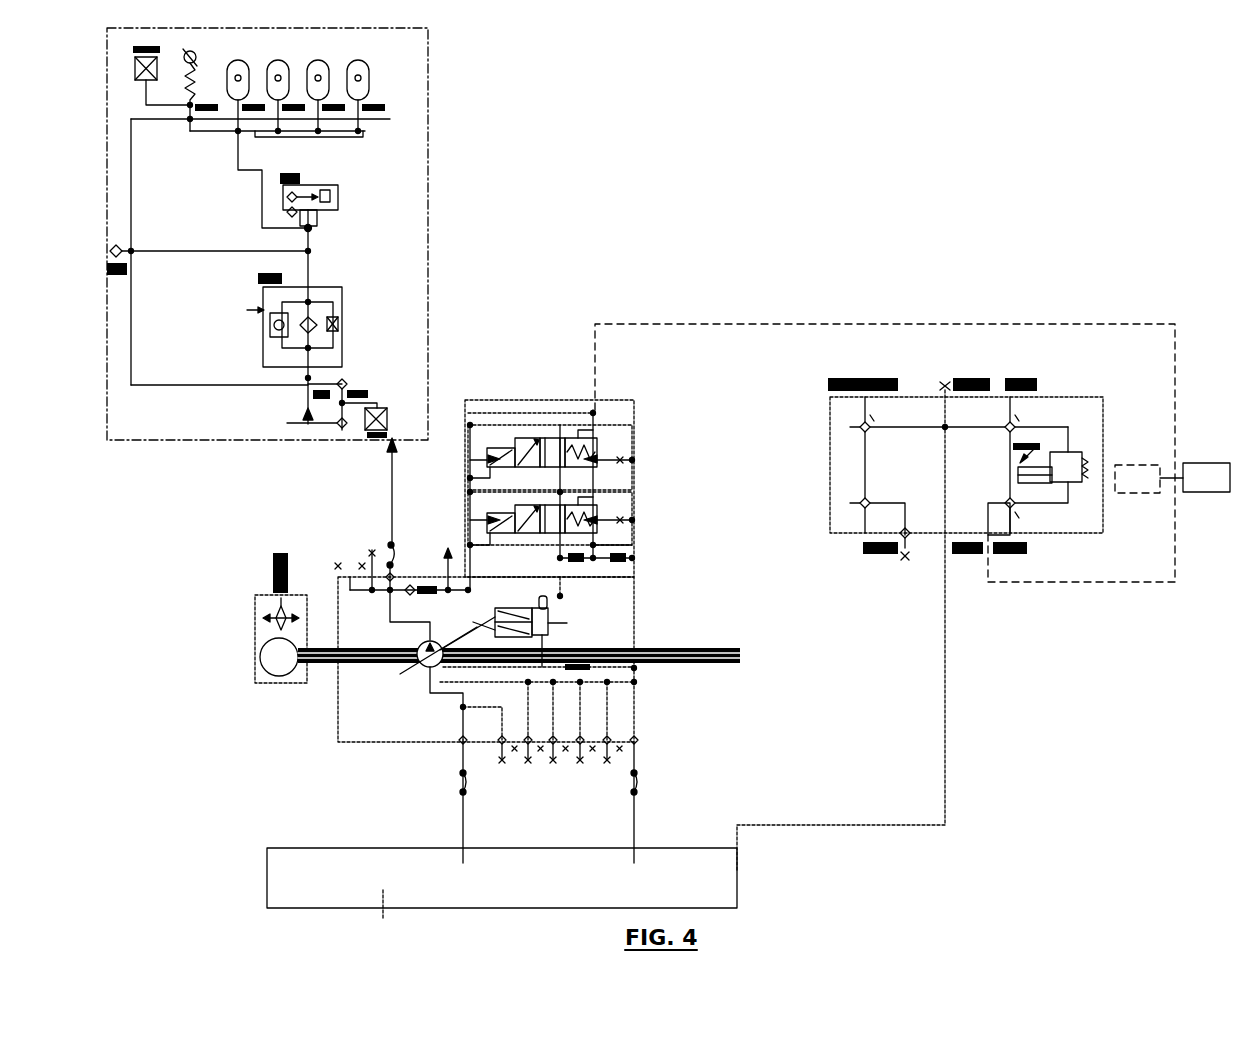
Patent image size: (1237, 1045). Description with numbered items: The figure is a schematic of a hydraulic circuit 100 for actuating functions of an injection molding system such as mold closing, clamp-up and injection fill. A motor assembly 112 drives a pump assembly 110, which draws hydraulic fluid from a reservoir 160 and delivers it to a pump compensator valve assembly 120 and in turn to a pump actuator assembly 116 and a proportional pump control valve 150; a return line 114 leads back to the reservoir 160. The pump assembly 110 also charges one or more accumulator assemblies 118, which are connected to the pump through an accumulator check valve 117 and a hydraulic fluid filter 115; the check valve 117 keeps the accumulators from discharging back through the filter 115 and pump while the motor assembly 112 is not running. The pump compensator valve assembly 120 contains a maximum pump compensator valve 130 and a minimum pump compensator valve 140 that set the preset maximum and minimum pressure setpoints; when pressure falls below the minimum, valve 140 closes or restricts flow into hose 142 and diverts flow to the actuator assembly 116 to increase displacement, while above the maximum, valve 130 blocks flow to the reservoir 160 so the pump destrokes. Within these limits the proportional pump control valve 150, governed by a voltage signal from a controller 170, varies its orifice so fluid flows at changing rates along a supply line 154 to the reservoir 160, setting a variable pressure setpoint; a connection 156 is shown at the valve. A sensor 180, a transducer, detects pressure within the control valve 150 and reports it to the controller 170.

The hydraulic circuit 100 is at (668, 474).
The pump assembly 110 is at (427, 660).
The motor assembly 112 is at (267, 618).
The return line 114 is at (488, 801).
The hydraulic fluid filter 115 is at (309, 319).
The pump actuator assembly 116 is at (521, 622).
The accumulator check valve 117 is at (318, 212).
The accumulator assemblies 118 is at (308, 137).
The pump compensator valve assembly 120 is at (573, 476).
The maximum pump compensator valve 130 is at (575, 527).
The minimum pump compensator valve 140 is at (572, 457).
The hose 142 is at (885, 453).
The proportional pump control valve 150 is at (921, 454).
The supply line 154 is at (860, 630).
The port connection 156 is at (896, 529).
The reservoir 160 is at (502, 884).
The controller 170 is at (1206, 477).
The sensor 180 is at (1149, 479).